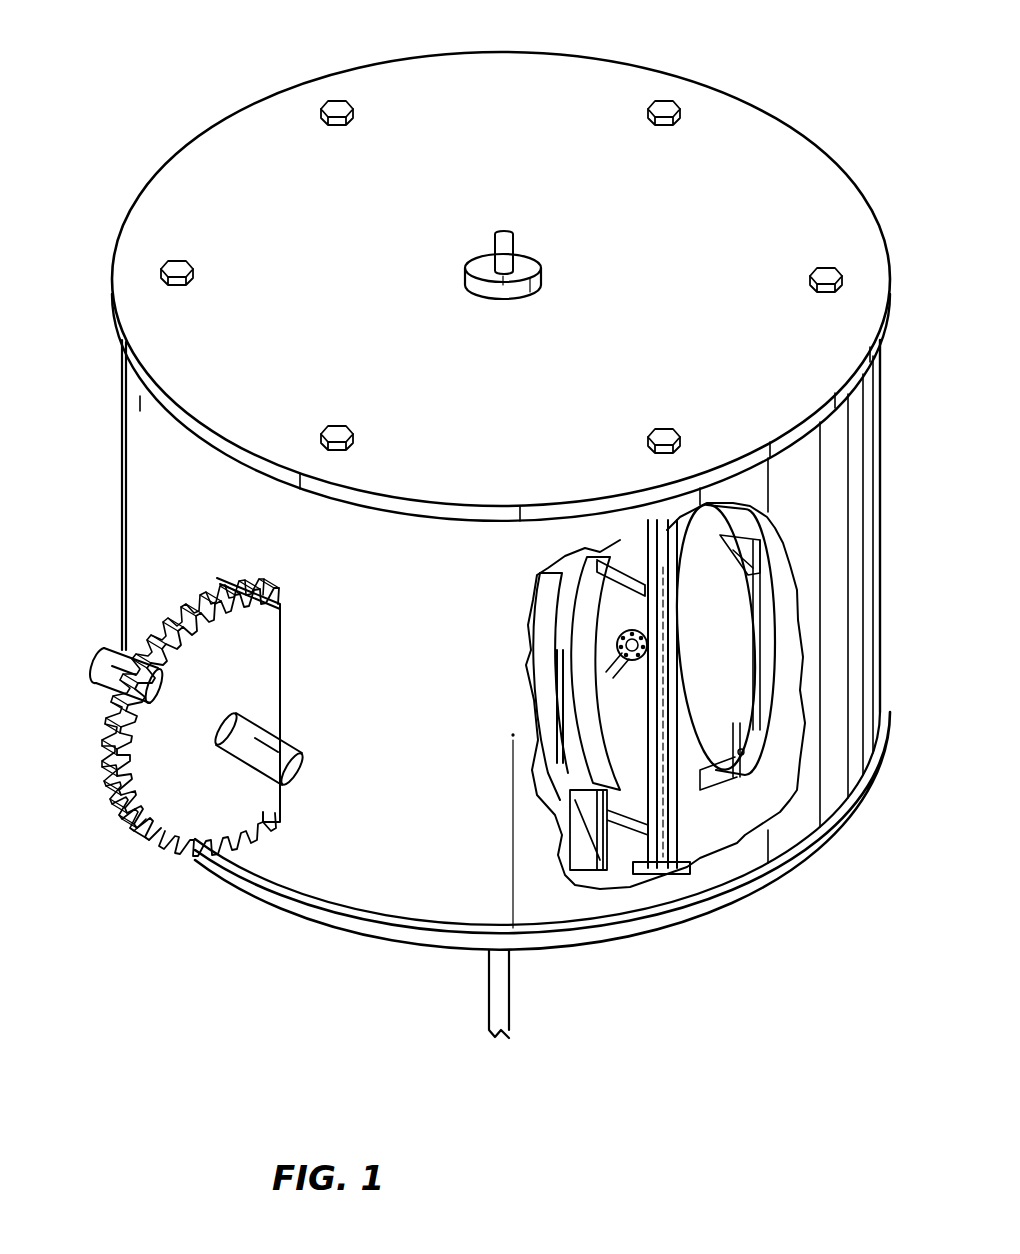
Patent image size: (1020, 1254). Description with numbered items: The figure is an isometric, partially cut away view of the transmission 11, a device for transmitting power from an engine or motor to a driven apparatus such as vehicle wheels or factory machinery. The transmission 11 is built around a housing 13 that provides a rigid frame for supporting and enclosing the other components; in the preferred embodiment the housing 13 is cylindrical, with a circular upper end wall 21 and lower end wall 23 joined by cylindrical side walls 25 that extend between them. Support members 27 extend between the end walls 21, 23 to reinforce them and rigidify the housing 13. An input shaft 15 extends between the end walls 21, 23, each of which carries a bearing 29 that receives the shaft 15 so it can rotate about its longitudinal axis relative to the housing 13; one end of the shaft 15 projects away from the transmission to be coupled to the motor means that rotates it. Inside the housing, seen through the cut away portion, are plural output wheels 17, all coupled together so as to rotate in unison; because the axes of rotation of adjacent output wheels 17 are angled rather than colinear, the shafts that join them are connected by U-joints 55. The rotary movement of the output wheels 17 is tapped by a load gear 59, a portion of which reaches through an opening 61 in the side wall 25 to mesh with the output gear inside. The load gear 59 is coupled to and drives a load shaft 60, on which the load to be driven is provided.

The transmission 11 is at (236, 89).
The housing 13 is at (810, 156).
The input shaft 15 is at (489, 991).
The output wheels 17 is at (595, 753).
The upper end wall 21 is at (554, 62).
The lower end wall 23 is at (312, 917).
The side walls 25 is at (873, 480).
The support members 27 is at (632, 873).
The bearing 29 is at (536, 264).
The U-joints 55 is at (618, 650).
The load gear 59 is at (190, 850).
The load shaft 60 is at (106, 679).
The opening 61 is at (222, 599).